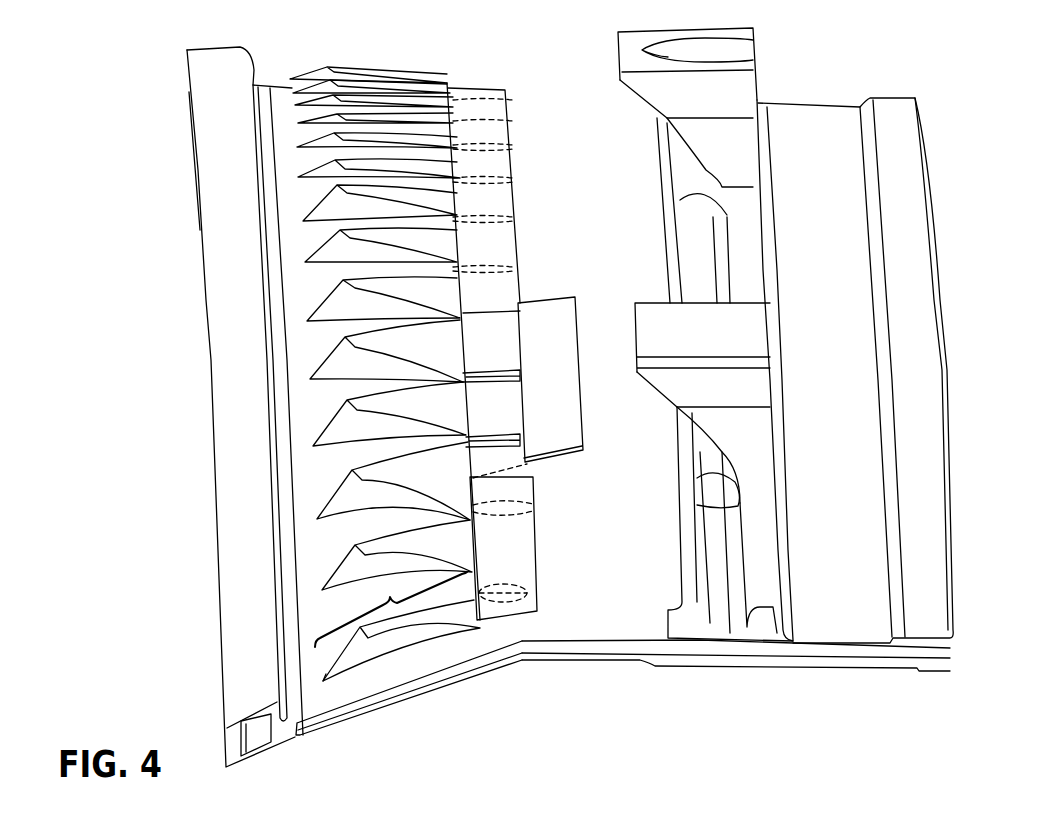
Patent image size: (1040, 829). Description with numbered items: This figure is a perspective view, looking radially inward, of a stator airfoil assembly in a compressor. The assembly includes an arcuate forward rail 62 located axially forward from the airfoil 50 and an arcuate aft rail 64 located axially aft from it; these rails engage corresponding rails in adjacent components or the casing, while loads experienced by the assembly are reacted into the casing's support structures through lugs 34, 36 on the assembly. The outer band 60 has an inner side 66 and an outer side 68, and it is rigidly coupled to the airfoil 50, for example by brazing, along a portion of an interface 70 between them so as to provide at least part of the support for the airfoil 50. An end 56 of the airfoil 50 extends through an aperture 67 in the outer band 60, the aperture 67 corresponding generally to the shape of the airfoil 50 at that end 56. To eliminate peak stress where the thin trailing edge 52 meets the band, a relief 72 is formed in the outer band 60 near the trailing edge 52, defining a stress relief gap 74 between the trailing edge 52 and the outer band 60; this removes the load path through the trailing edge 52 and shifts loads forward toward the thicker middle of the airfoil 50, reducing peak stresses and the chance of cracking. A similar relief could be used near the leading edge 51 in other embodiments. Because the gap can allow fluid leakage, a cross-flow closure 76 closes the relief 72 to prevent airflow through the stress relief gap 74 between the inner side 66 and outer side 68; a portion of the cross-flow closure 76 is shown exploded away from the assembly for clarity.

The lug 34 is at (635, 40).
The lug 36 is at (762, 327).
The airfoil 50 is at (408, 648).
The leading edge 51 is at (323, 683).
The trailing edge 52 is at (498, 600).
The end of the airfoil 56 is at (365, 388).
The outer band 60 is at (621, 645).
The arcuate forward rail 62 is at (246, 613).
The arcuate aft rail 64 is at (923, 418).
The inner side 66 is at (368, 713).
The aperture 67 is at (357, 467).
The outer side 68 is at (310, 613).
The interface 70 is at (391, 609).
The relief 72 is at (478, 615).
The stress relief gap 74 is at (525, 598).
The cross-flow closure 76 is at (580, 312).